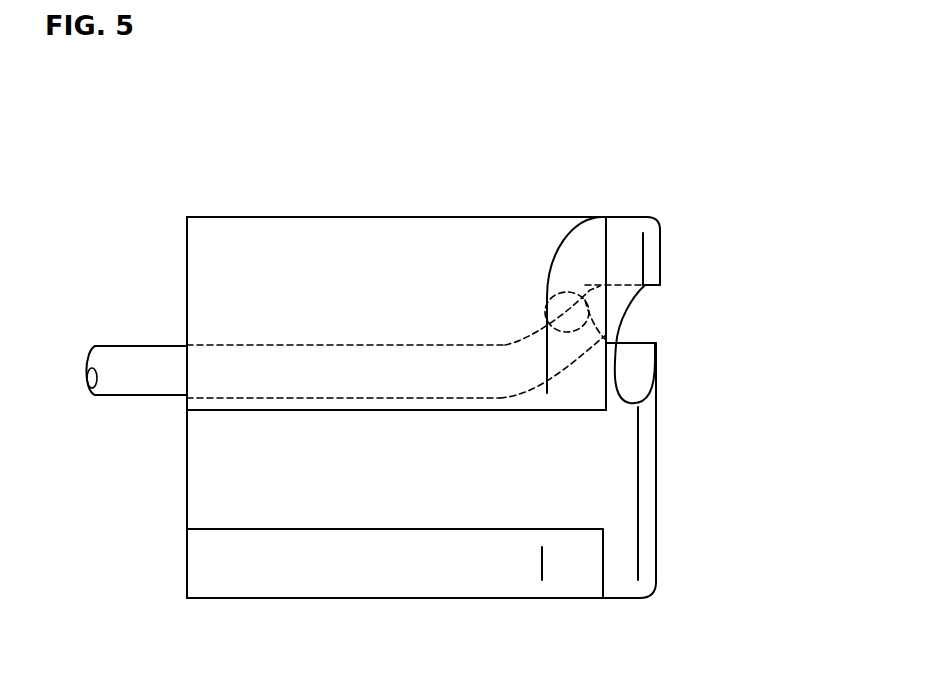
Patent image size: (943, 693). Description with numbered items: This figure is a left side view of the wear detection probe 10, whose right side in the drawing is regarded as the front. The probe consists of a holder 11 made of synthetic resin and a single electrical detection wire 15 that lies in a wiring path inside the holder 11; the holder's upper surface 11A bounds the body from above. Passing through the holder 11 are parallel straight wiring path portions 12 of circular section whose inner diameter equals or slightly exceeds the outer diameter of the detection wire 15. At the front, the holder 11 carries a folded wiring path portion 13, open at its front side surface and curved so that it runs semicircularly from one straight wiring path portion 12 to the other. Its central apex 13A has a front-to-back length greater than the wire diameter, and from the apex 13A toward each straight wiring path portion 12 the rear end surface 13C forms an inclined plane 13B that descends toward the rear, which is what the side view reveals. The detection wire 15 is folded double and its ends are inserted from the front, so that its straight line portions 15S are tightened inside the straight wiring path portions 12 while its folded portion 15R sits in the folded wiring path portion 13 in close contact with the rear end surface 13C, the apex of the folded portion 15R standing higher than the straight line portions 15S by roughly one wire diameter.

The wear detection probe 10 is at (683, 242).
The holder 11 is at (408, 237).
The top surface of housing 11A is at (458, 217).
The straight wiring path portion 12 is at (272, 347).
The folded wiring path portion 13 is at (644, 287).
The apex 13A is at (643, 343).
The inclined plane 13B is at (500, 344).
The rear end surface 13C is at (585, 300).
The electrical detection wire 15 is at (142, 322).
The folded portion 15R is at (648, 285).
The straight line portion 15S is at (330, 370).